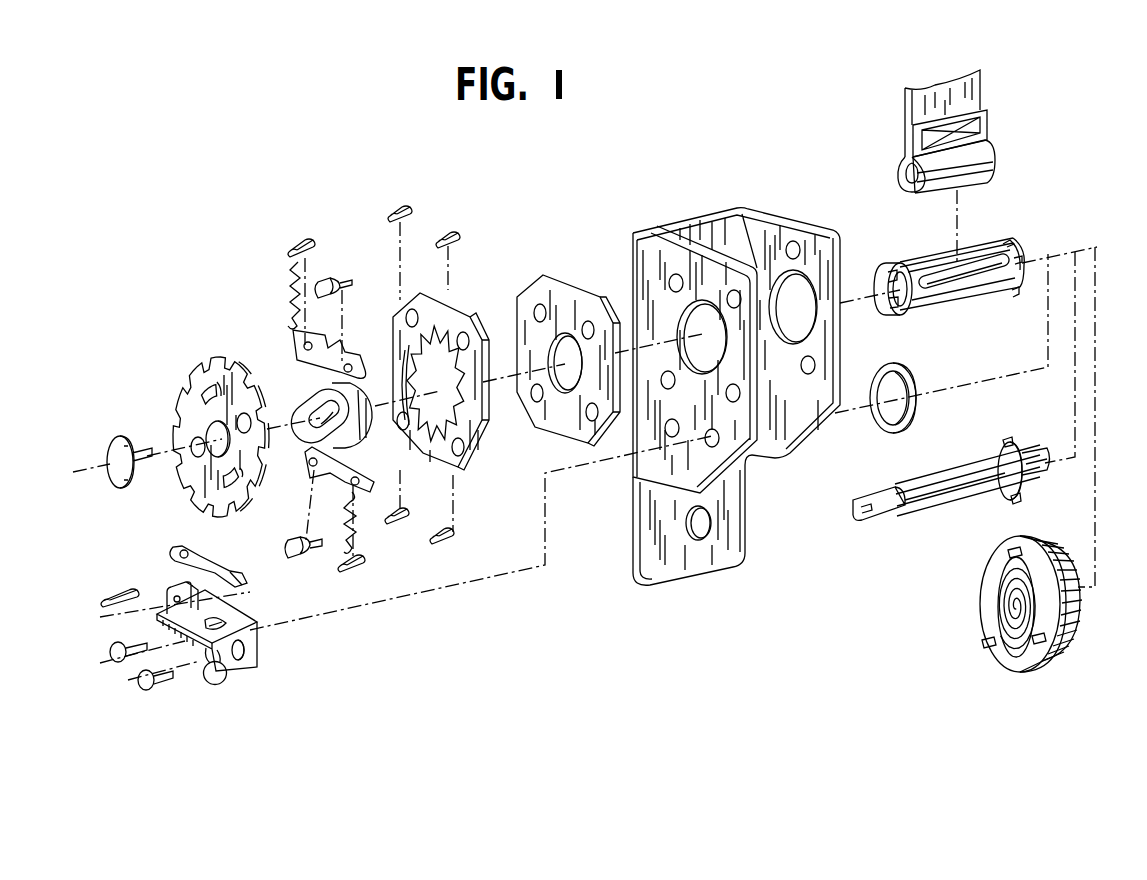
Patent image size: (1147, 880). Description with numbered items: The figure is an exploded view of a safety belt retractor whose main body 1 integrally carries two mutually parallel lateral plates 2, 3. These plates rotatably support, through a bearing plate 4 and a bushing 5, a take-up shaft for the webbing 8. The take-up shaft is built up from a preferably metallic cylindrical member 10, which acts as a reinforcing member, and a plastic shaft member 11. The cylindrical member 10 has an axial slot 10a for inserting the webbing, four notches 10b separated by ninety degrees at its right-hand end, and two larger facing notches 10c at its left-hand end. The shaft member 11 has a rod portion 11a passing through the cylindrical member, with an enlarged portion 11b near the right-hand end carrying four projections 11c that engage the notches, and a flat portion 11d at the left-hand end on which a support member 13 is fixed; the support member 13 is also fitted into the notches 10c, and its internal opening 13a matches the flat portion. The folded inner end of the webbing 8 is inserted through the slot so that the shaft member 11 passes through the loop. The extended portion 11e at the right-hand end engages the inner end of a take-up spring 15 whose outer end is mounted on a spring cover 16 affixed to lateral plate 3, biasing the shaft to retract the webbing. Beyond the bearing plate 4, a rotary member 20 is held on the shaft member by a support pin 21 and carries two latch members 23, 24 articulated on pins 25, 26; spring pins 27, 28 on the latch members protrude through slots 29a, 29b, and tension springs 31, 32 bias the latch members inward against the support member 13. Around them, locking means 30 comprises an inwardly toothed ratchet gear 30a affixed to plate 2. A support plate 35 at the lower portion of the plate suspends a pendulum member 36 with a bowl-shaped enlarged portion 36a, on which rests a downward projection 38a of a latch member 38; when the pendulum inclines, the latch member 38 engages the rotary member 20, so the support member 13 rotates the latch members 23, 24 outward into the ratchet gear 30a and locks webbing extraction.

The main body 1 is at (736, 401).
The lateral plate 2 is at (693, 262).
The lateral plate 3 is at (773, 228).
The bearing plate 4 is at (567, 293).
The bushing 5 is at (906, 364).
The webbing 8 is at (948, 90).
The cylindrical member 10 is at (954, 269).
The slot 10a is at (950, 284).
The notches 10b is at (1008, 243).
The notches 10c is at (880, 286).
The shaft member 11 is at (971, 473).
The rod portion 11a is at (942, 506).
The enlarged portion 11b is at (1018, 458).
The projections 11c is at (1008, 438).
The flat portion 11d is at (872, 518).
The extended portion 11e is at (1050, 462).
The support member 13 is at (329, 430).
The slot in block 13a is at (318, 424).
The take-up spring 15 is at (1017, 650).
The spring cover 16 is at (1050, 626).
The rotary member 20 is at (216, 419).
The support pin 21 is at (114, 474).
The latch member 23 is at (352, 360).
The latch member 24 is at (362, 486).
The pin 25 is at (324, 282).
The pin 26 is at (300, 556).
The spring pin 27 is at (296, 254).
The spring pin 28 is at (365, 569).
The slot 29a is at (204, 392).
The slot 29b is at (238, 502).
The locking means 30 is at (460, 376).
The inwardly toothed ratchet gear 30a is at (424, 332).
The tension spring 31 is at (355, 532).
The tension spring 32 is at (290, 300).
The support plate 35 is at (234, 645).
The pendulum member 36 is at (227, 677).
The bowl-shaped enlarged portion 36a is at (228, 620).
The latch member 38 is at (195, 546).
The downward projection 38a is at (240, 582).